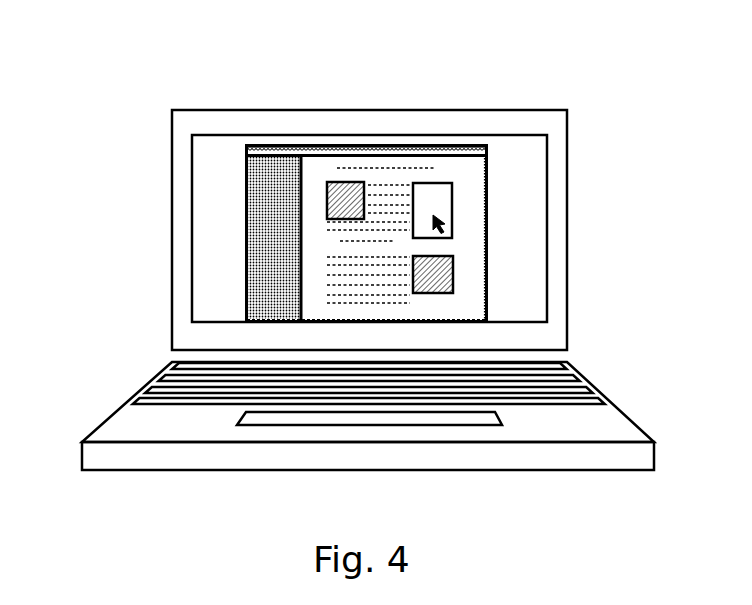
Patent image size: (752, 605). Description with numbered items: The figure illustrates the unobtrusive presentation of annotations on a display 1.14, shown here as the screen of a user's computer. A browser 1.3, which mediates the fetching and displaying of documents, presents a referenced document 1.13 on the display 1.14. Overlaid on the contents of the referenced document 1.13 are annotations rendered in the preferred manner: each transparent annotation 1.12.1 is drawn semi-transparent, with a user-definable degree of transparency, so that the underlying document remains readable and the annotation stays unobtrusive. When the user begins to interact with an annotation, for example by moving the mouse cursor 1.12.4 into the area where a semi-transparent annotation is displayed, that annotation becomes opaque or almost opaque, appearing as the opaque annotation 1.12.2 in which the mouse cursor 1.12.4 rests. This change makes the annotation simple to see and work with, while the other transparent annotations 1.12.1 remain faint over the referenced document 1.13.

The display 1.14 is at (233, 123).
The referenced document 1.13 is at (305, 202).
The browser 1.3 is at (245, 280).
The transparent annotation 1.12.1 is at (342, 193).
The opaque annotation 1.12.2 is at (432, 207).
The mouse cursor 1.12.4 is at (440, 225).